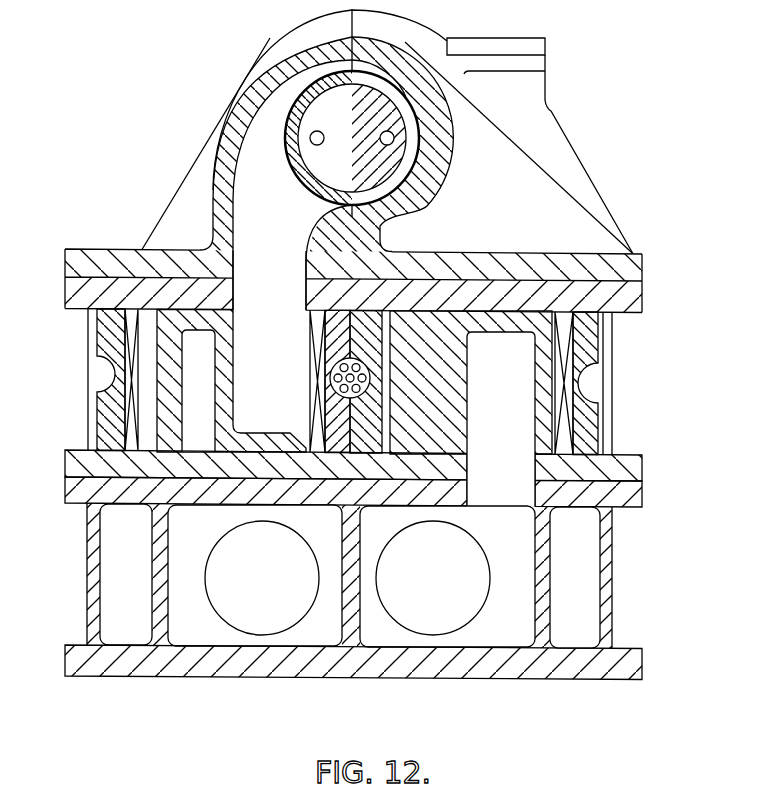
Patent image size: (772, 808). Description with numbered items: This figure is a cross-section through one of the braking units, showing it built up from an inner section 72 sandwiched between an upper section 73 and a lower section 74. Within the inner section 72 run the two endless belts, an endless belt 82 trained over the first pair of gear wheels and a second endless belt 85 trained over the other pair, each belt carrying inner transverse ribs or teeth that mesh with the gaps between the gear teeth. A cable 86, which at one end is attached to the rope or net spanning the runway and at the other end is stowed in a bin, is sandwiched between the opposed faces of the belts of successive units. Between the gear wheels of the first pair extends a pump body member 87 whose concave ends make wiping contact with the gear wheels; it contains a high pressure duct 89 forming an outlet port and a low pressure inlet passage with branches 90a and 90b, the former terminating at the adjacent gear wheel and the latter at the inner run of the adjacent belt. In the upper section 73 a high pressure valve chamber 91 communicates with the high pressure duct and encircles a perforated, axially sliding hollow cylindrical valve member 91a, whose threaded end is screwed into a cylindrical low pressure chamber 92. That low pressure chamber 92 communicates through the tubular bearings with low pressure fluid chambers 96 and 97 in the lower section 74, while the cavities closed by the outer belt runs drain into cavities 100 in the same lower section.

The inner section 72 is at (618, 372).
The upper section 73 is at (624, 206).
The lower section 74 is at (623, 570).
The endless belt 82 is at (563, 425).
The endless belt 85 is at (133, 328).
The cable 86 is at (333, 383).
The pump body member 87 is at (433, 328).
The high pressure duct 89 is at (215, 308).
The low pressure passage branch 90a is at (522, 437).
The low pressure passage branch 90b is at (188, 407).
The high pressure valve chamber 91 is at (243, 172).
The hollow cylindrical valve member 91a is at (297, 102).
The low pressure chamber 92 is at (300, 121).
The low pressure fluid chamber 96 is at (418, 622).
The low pressure fluid chamber 97 is at (285, 622).
The cavities 100 is at (585, 613).